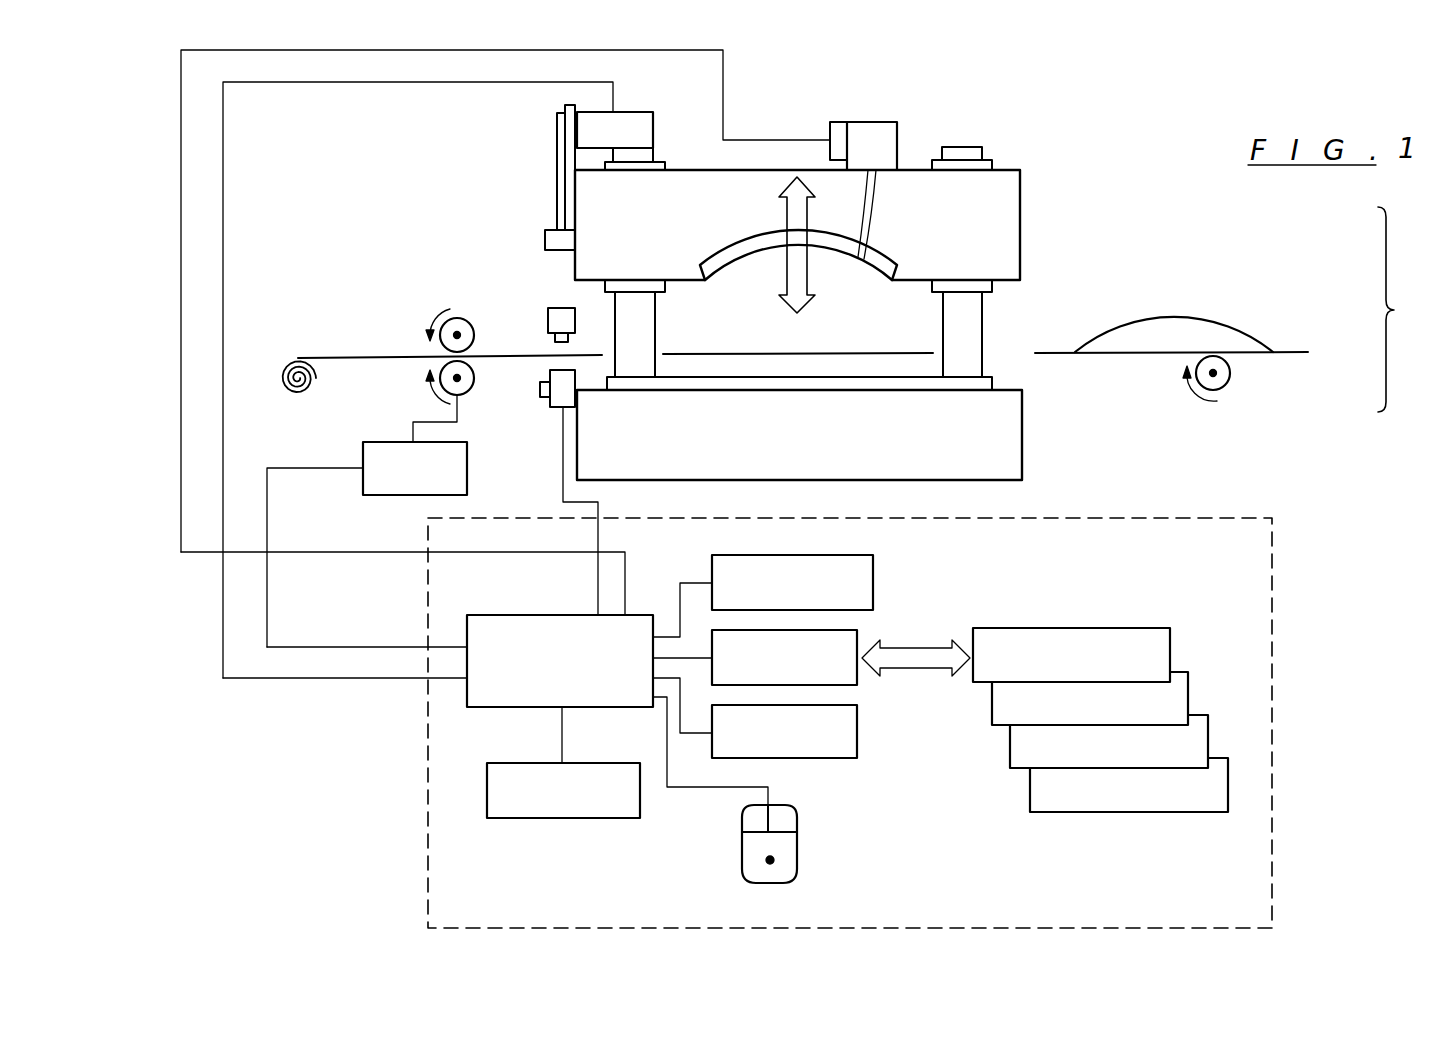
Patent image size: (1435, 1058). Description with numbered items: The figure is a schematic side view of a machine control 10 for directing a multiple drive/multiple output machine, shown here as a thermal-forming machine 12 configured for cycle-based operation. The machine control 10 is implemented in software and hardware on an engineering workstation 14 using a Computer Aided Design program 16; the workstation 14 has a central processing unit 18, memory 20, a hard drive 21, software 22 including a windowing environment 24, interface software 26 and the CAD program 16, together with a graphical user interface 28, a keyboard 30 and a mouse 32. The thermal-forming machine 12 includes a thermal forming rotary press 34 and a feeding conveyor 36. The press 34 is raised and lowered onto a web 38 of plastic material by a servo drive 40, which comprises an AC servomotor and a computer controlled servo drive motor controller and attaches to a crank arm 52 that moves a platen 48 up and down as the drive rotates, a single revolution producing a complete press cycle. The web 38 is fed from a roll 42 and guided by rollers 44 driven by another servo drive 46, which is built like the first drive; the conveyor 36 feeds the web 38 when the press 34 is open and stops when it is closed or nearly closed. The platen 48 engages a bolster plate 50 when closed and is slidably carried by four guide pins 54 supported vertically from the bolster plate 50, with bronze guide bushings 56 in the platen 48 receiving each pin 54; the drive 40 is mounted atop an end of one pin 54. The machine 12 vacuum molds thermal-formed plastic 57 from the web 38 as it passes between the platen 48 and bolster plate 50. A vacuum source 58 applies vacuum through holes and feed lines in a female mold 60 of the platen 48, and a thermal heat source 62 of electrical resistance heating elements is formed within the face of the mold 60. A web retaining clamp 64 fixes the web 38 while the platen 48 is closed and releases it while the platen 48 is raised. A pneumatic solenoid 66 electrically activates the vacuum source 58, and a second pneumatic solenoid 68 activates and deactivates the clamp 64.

The machine control 10 is at (386, 749).
The thermal-forming machine 12 is at (1080, 103).
The engineering workstation 14 is at (1272, 563).
The Computer Aided Design (CAD) program 16 is at (1228, 787).
The central processing unit (CPU) 18 is at (560, 615).
The memory 20 is at (848, 640).
The hard drive 21 is at (868, 580).
The software 22 is at (1170, 643).
The windowing environment 24 is at (1188, 702).
The interface software 26 is at (1208, 737).
The graphical user interface 28 is at (857, 740).
The keyboard 30 is at (537, 818).
The mouse 32 is at (797, 847).
The thermal forming rotary press 34 is at (983, 498).
The feeding conveyor 36 is at (375, 322).
The web 38 is at (352, 357).
The servo drive 40 is at (618, 112).
The roll 42 is at (298, 397).
The rollers 44 is at (474, 330).
The servo drive 46 is at (382, 442).
The platen 48 is at (1020, 203).
The bolster plate 50 is at (1022, 443).
The crank arm 52 is at (557, 135).
The guide pins 54 is at (982, 342).
The guide bushings 56 is at (992, 287).
The thermal-formed plastic 57 is at (1210, 317).
The vacuum source 58 is at (897, 138).
The female mold 60 is at (856, 287).
The thermal heat source 62 is at (746, 263).
The web retaining clamp 64 is at (557, 308).
The pneumatic solenoid 66 is at (843, 122).
The pneumatic solenoid 68 is at (540, 392).